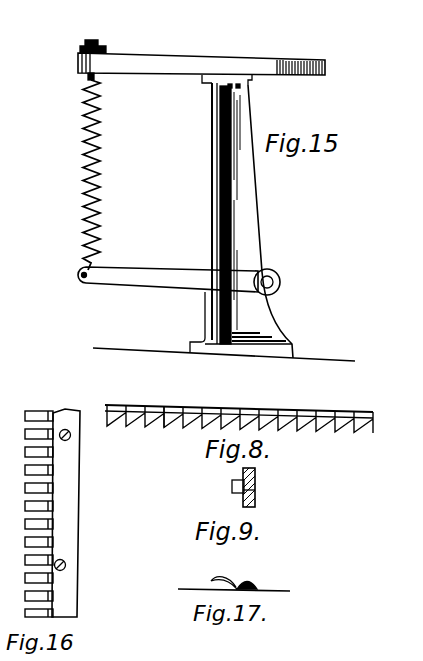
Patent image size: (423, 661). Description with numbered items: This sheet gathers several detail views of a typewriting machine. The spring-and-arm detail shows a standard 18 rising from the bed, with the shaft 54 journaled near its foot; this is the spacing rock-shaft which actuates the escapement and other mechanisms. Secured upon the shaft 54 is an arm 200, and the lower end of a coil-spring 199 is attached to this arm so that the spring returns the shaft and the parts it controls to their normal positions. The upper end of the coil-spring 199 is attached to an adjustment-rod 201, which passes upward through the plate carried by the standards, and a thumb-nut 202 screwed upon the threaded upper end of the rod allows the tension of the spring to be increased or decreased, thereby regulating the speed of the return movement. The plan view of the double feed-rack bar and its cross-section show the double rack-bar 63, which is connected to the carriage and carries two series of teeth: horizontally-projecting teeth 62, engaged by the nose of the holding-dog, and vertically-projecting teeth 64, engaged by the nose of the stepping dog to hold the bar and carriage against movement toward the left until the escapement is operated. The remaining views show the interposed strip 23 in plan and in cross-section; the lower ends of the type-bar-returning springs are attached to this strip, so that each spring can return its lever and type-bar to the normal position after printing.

In FIG. 15, the standard 18 is at (245, 200).
In FIG. 15, the shaft 54 is at (281, 283).
In FIG. 15, the coil-spring 199 is at (95, 197).
In FIG. 15, the arm 200 is at (152, 271).
In FIG. 15, the adjustment-rod 201 is at (90, 78).
In FIG. 15, the thumb-nut 202 is at (100, 44).
In FIG. 16, the strip 23 is at (65, 526).
In FIG. 17, the strip 23 is at (262, 584).
In FIG. 8, the horizontally-projecting teeth 62 is at (151, 428).
In FIG. 9, the horizontally-projecting teeth 62 is at (232, 487).
In FIG. 9, the double rack-bar 63 is at (255, 491).
In FIG. 8, the vertically-projecting teeth 64 is at (161, 410).
In FIG. 9, the vertically-projecting teeth 64 is at (255, 470).